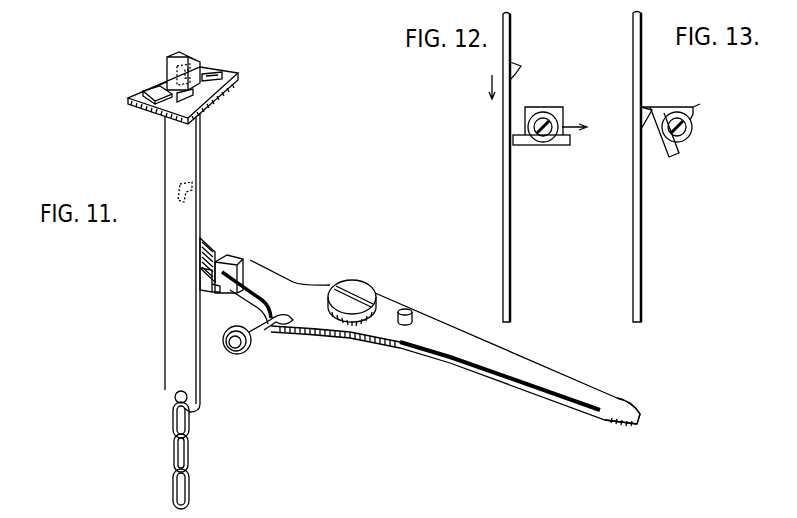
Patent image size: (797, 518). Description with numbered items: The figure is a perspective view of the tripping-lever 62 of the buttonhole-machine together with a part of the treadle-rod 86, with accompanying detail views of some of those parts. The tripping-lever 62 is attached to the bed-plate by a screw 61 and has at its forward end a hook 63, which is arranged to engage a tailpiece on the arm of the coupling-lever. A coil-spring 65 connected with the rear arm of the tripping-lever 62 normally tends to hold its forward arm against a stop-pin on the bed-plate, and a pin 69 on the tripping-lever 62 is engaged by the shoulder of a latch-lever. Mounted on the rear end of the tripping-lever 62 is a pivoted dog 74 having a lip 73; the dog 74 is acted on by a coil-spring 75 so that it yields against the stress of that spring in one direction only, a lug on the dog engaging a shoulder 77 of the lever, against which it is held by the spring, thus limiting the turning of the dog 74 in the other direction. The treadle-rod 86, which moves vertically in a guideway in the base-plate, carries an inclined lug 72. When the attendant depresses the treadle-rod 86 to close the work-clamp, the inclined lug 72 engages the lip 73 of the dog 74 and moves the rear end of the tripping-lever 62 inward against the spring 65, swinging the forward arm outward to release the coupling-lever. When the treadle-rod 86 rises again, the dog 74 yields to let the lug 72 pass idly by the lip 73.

In FIG. 11, the screw 61 is at (330, 300).
In FIG. 11, the tripping-lever 62 is at (390, 327).
In FIG. 11, the hook 63 is at (623, 397).
In FIG. 11, the coil-spring 65 is at (244, 350).
In FIG. 11, the pin 69 is at (413, 311).
In FIG. 12, the inclined lug 72 is at (529, 60).
In FIG. 13, the inclined lug 72 is at (647, 104).
In FIG. 11, the lip 73 is at (210, 284).
In FIG. 12, the lip 73 is at (527, 143).
In FIG. 13, the lip 73 is at (660, 106).
In FIG. 11, the pivoted dog 74 is at (211, 252).
In FIG. 12, the pivoted dog 74 is at (545, 111).
In FIG. 13, the pivoted dog 74 is at (691, 117).
In FIG. 11, the coil-spring 75 is at (234, 261).
In FIG. 11, the shoulder 77 is at (239, 266).
In FIG. 12, the shoulder 77 is at (563, 114).
In FIG. 13, the shoulder 77 is at (694, 108).
In FIG. 11, the treadle-rod 86 is at (173, 373).
In FIG. 12, the treadle-rod 86 is at (507, 286).
In FIG. 13, the treadle-rod 86 is at (640, 286).